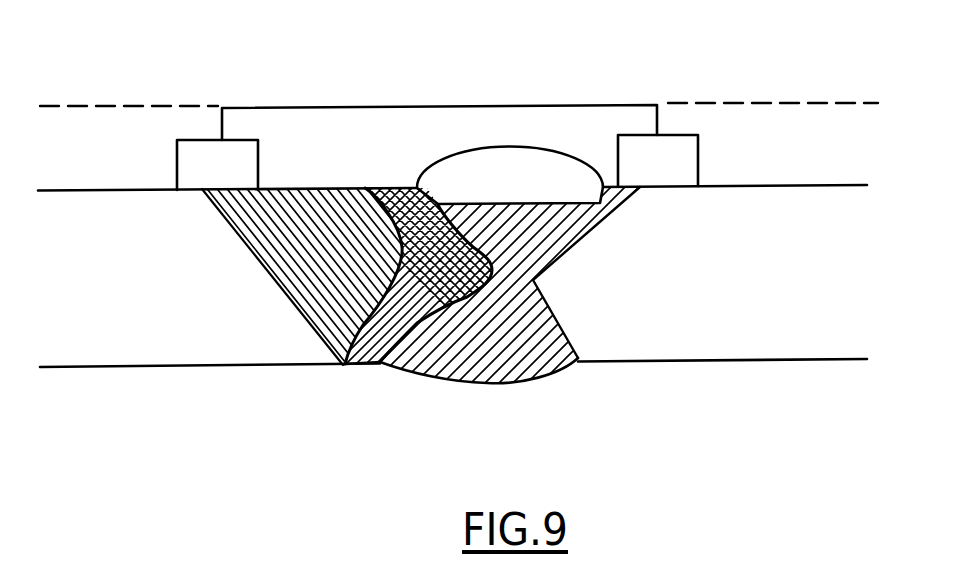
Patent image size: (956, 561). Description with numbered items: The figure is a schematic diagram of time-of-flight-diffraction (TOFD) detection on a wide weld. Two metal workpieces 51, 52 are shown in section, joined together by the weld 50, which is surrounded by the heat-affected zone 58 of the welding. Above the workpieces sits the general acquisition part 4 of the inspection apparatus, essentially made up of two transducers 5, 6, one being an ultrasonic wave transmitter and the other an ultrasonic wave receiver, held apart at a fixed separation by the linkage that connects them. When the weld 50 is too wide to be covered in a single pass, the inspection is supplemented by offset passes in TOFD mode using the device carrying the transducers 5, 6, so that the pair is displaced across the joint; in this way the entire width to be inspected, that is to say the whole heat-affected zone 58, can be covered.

The acquisition part 4 is at (440, 107).
The transducer 5 is at (192, 140).
The transducer 6 is at (678, 135).
The weld 50 is at (513, 346).
The metal workpiece 51 is at (182, 305).
The metal workpiece 52 is at (692, 302).
The heat-affected zone 58 is at (360, 364).